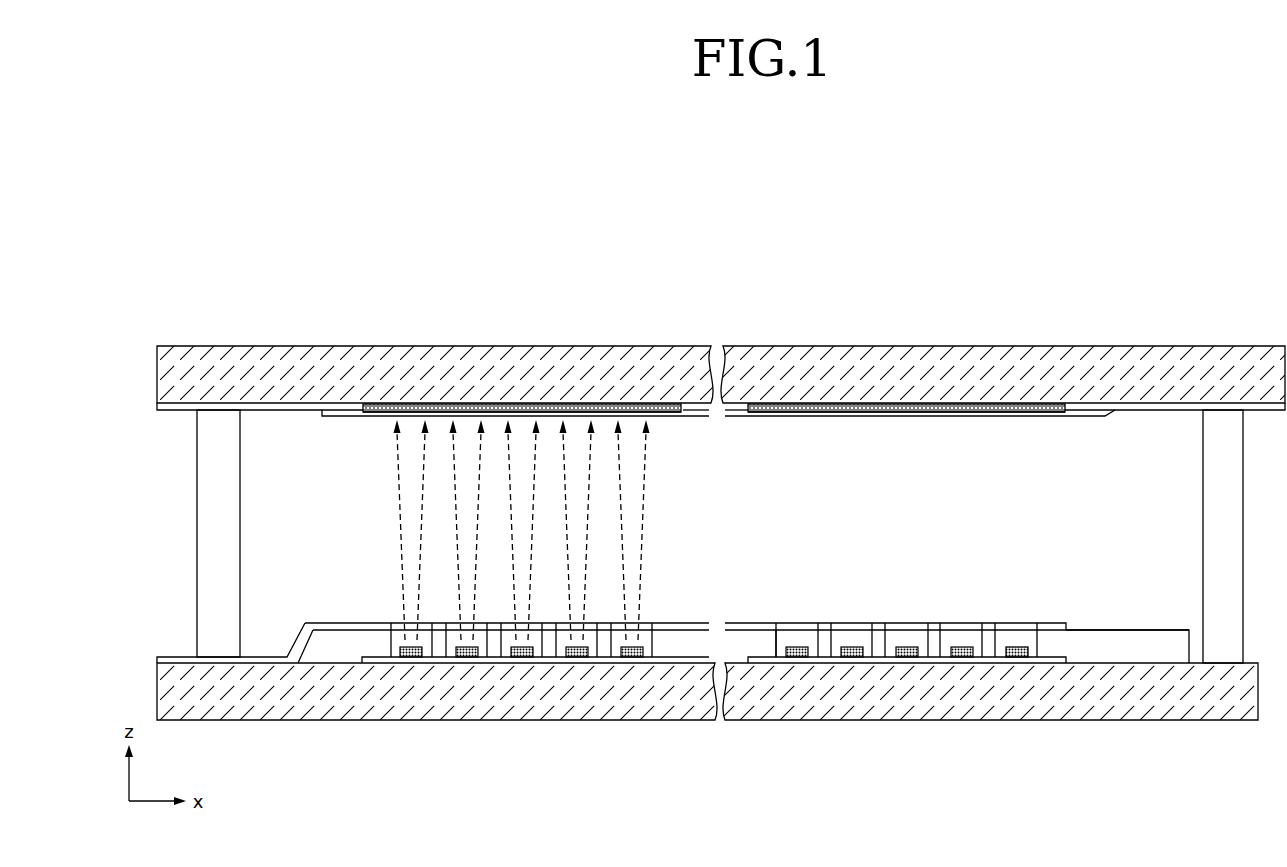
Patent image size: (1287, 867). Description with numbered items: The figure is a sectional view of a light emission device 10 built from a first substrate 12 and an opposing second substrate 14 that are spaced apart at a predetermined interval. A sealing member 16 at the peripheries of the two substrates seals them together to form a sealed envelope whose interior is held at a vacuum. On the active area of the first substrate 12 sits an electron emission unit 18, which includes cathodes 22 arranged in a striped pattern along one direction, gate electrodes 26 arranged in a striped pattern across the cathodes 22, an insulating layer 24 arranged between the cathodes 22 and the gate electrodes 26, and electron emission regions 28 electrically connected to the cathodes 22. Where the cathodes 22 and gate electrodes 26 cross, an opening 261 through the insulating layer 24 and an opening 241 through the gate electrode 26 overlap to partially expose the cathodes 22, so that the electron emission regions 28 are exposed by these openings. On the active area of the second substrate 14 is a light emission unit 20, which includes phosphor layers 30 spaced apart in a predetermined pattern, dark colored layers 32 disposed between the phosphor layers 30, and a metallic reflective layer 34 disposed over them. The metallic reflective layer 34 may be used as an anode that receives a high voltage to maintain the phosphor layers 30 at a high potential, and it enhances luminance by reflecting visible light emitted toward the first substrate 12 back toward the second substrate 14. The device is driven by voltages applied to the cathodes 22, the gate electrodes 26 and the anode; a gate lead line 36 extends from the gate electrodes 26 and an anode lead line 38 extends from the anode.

The light emission device 10 is at (721, 511).
The first substrate 12 is at (960, 700).
The second substrate 14 is at (788, 360).
The sealing member 16 is at (1233, 553).
The electron emission unit 18 is at (747, 653).
The light emission unit 20 is at (718, 390).
The cathode 22 is at (495, 660).
The insulating layer 24 is at (1105, 662).
The opening 241 is at (1017, 641).
The gate electrode 26 is at (685, 628).
The opening 261 is at (803, 628).
The electron emission region 28 is at (852, 645).
The phosphor layer 30 is at (537, 406).
The dark colored layer 32 is at (697, 407).
The metallic reflective layer 34 is at (610, 413).
The gate lead line 36 is at (176, 660).
The anode lead line 38 is at (1265, 405).